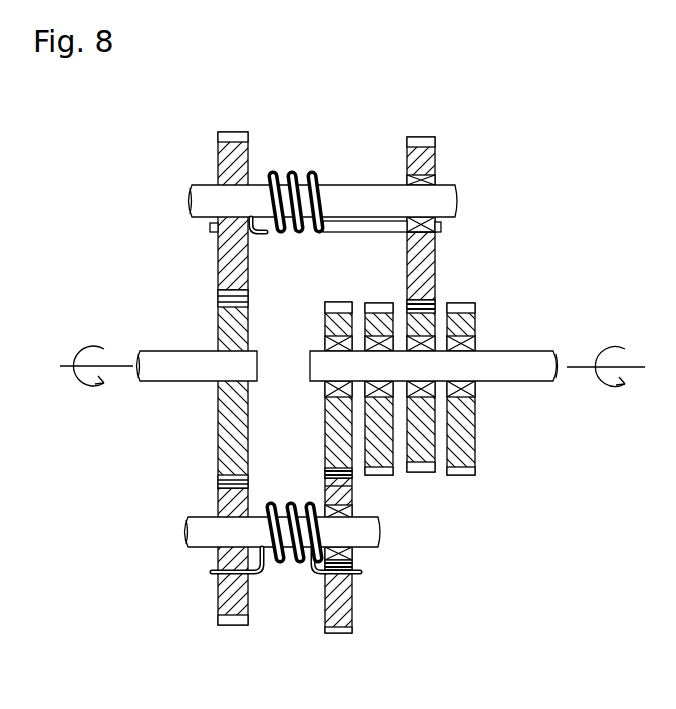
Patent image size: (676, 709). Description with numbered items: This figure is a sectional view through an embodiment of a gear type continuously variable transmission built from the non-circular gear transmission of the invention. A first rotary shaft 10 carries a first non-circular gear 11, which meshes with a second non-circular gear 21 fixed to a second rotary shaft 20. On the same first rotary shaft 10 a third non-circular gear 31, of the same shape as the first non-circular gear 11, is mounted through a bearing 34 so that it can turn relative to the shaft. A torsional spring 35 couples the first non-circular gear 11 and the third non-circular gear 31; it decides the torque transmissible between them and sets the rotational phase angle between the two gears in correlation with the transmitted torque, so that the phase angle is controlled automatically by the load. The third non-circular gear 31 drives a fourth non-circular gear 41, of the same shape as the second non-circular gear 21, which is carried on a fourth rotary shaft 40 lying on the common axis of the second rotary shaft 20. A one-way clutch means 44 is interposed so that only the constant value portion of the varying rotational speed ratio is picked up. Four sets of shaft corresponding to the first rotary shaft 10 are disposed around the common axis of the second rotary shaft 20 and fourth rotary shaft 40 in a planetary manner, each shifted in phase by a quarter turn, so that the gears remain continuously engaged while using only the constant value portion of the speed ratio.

The first rotary shaft 10 is at (207, 198).
The first non-circular gear 11 is at (228, 165).
The second rotary shaft 20 is at (170, 370).
The second non-circular gear 21 is at (222, 330).
The third non-circular gear 31 is at (432, 192).
The bearing 34 is at (435, 160).
The torsional spring 35 is at (275, 180).
The fourth rotary shaft 40 is at (530, 357).
The fourth non-circular gear 41 is at (380, 475).
The one-way clutch means 44 is at (383, 310).